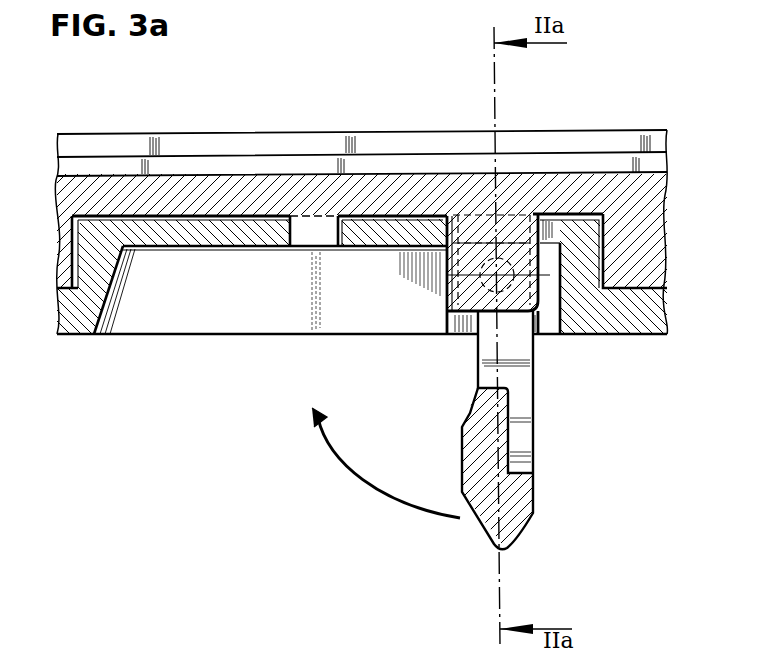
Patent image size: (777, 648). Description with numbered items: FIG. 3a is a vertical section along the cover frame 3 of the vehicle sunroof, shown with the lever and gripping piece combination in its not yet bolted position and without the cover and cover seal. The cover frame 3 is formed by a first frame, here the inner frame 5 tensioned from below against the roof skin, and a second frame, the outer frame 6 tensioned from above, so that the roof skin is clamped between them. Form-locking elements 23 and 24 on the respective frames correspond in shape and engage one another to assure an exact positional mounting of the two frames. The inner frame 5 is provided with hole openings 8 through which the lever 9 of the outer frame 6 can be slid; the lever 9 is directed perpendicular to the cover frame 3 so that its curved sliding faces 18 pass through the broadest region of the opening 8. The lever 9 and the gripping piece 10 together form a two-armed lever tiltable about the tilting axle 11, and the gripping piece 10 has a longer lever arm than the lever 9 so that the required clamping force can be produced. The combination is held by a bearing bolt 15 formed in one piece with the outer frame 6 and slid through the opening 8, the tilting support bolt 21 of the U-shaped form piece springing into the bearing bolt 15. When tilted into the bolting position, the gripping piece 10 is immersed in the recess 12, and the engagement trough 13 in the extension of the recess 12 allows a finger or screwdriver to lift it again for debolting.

The cover frame 3 is at (650, 129).
The inner frame 5 is at (653, 313).
The outer frame 6 is at (650, 198).
The hole opening 8 is at (557, 311).
The lever 9 is at (470, 255).
The gripping piece 10 is at (520, 499).
The tilting axle 11 is at (497, 272).
The recess 12 is at (258, 283).
The engagement trough 13 is at (133, 297).
The bearing bolt 15 is at (455, 252).
The sliding face 18 is at (590, 262).
The tilting support bolt 21 is at (535, 362).
The form-locking element 23 is at (78, 276).
The form-locking element 24 is at (75, 255).